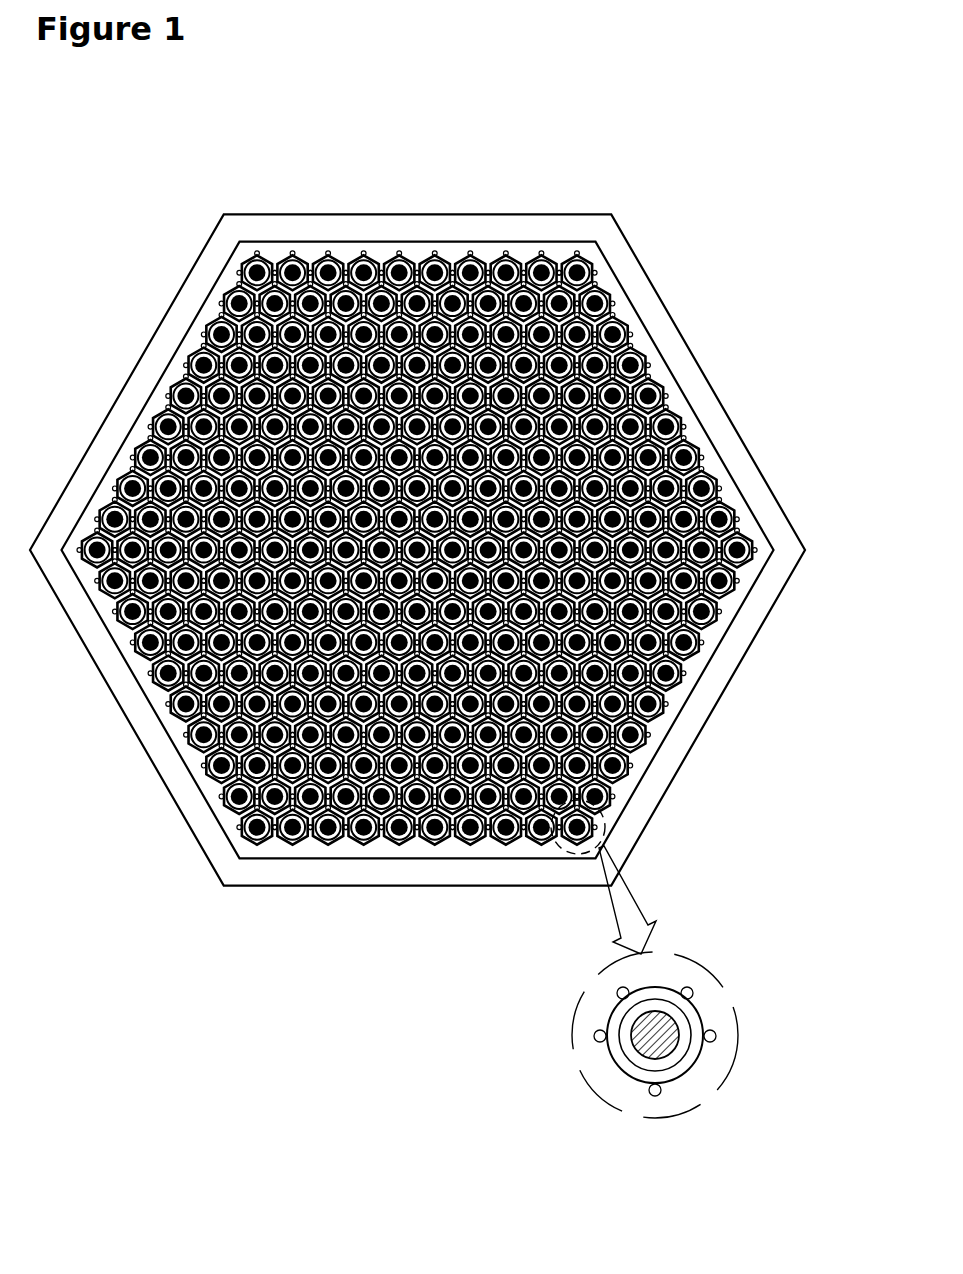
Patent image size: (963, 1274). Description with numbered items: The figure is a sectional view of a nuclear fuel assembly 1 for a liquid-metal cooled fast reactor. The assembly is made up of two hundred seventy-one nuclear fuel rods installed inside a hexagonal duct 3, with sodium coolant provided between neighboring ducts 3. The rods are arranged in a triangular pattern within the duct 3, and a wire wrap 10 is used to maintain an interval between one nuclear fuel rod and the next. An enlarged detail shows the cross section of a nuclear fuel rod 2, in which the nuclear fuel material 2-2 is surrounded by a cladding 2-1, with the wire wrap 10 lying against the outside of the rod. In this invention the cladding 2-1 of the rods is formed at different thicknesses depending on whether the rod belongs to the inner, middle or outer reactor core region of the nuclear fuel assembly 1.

The nuclear fuel assembly 1 is at (464, 182).
The duct 3 is at (690, 384).
The cross section of nuclear fuel rod 2 is at (606, 1056).
The cladding 2-1 is at (690, 1012).
The nuclear fuel material 2-2 is at (676, 1034).
The wire wrap 10 is at (685, 986).